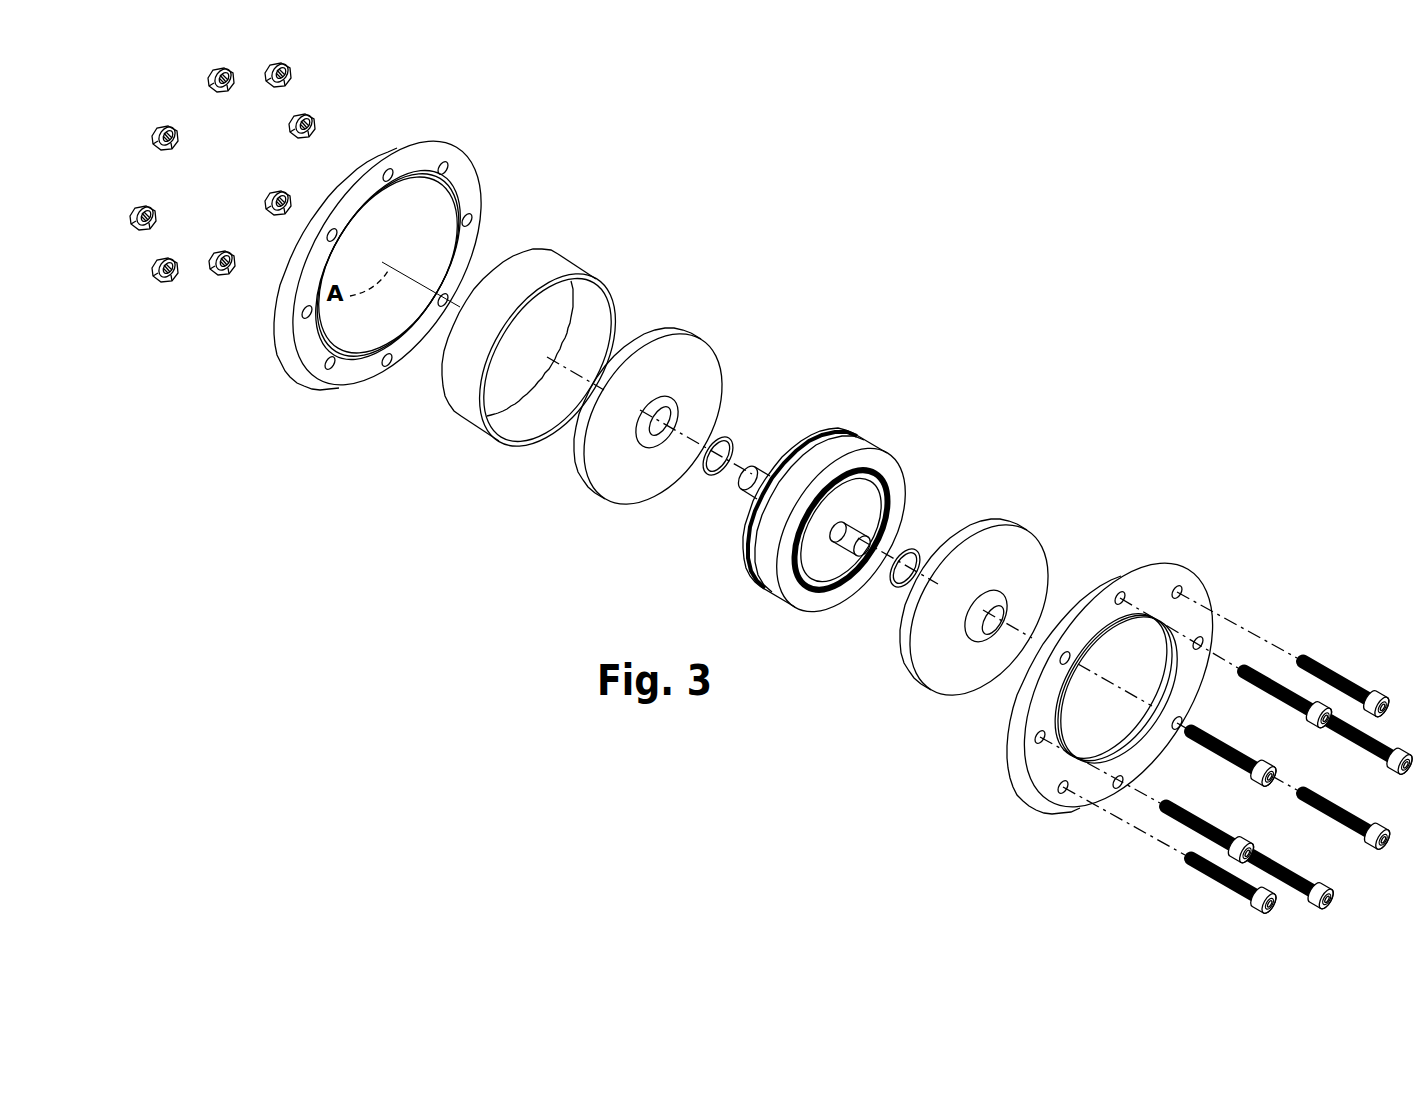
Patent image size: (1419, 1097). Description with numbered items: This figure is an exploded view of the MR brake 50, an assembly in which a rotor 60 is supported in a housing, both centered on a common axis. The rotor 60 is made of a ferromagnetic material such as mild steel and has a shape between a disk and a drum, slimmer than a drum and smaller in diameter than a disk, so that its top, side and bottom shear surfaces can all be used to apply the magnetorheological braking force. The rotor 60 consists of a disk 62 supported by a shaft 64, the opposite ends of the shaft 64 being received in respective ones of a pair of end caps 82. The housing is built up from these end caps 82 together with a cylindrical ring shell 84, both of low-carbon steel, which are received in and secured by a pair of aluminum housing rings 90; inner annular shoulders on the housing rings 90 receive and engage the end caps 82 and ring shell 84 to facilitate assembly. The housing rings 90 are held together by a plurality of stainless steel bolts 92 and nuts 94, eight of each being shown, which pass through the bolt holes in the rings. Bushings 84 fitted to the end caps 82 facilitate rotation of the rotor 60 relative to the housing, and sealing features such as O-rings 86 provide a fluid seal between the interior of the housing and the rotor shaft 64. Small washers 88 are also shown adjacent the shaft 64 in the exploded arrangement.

The MR brake 50 is at (509, 126).
The rotor 60 is at (843, 380).
The disk 62 is at (885, 462).
The shaft 64 is at (743, 486).
The end caps 82 is at (678, 356).
The cylindrical ring shell 84 is at (542, 265).
The O-rings 86 is at (640, 432).
The washer ring 88 is at (706, 478).
The housing rings 90 is at (363, 193).
The bolts 92 is at (1240, 937).
The nuts 94 is at (118, 290).